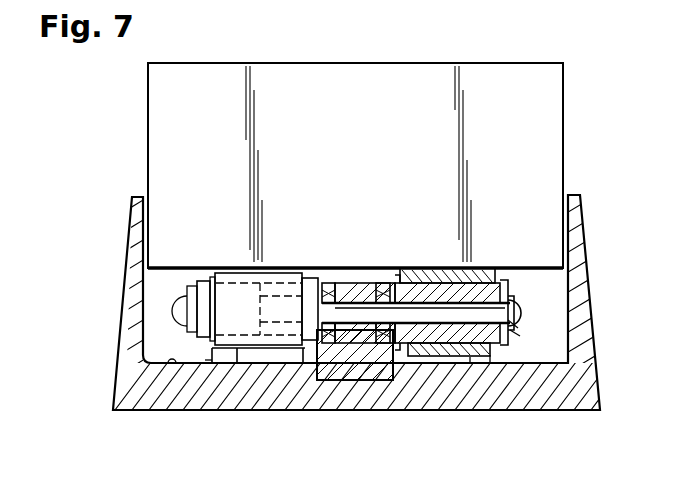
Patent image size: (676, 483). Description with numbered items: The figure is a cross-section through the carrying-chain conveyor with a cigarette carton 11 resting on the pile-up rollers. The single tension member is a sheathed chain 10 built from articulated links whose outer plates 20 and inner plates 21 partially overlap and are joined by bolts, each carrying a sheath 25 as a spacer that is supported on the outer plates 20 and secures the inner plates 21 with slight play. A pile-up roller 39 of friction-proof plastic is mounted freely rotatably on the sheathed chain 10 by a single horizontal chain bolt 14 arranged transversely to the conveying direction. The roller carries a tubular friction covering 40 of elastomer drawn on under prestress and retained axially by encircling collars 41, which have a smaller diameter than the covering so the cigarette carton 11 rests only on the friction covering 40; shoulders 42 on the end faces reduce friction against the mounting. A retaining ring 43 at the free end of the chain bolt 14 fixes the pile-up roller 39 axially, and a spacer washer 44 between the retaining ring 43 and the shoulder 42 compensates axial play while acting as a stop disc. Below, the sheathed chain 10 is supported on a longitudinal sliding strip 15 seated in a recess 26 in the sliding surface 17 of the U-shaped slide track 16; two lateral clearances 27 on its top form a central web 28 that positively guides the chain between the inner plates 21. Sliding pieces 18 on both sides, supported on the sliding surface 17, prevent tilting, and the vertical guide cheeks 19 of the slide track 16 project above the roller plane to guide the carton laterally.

The sheathed chain 10 is at (365, 253).
The cigarette carton 11 is at (412, 88).
The chain bolt 14 is at (508, 340).
The sliding strip 15 is at (346, 382).
The slide track 16 is at (136, 392).
The sliding surface 17 is at (172, 368).
The sliding piece 18 is at (208, 368).
The guide cheek 19 is at (137, 223).
The outer plate 20 is at (322, 272).
The inner plate 21 is at (332, 280).
The sheath 25 is at (345, 282).
The recess 26 is at (393, 352).
The clearance 27 is at (322, 342).
The central web 28 is at (360, 382).
The pile-up roller 39 is at (265, 358).
The friction covering 40 is at (240, 352).
The collar 41 is at (400, 272).
The shoulder 42 is at (395, 275).
The retaining ring 43 is at (522, 338).
The spacer washer 44 is at (516, 334).